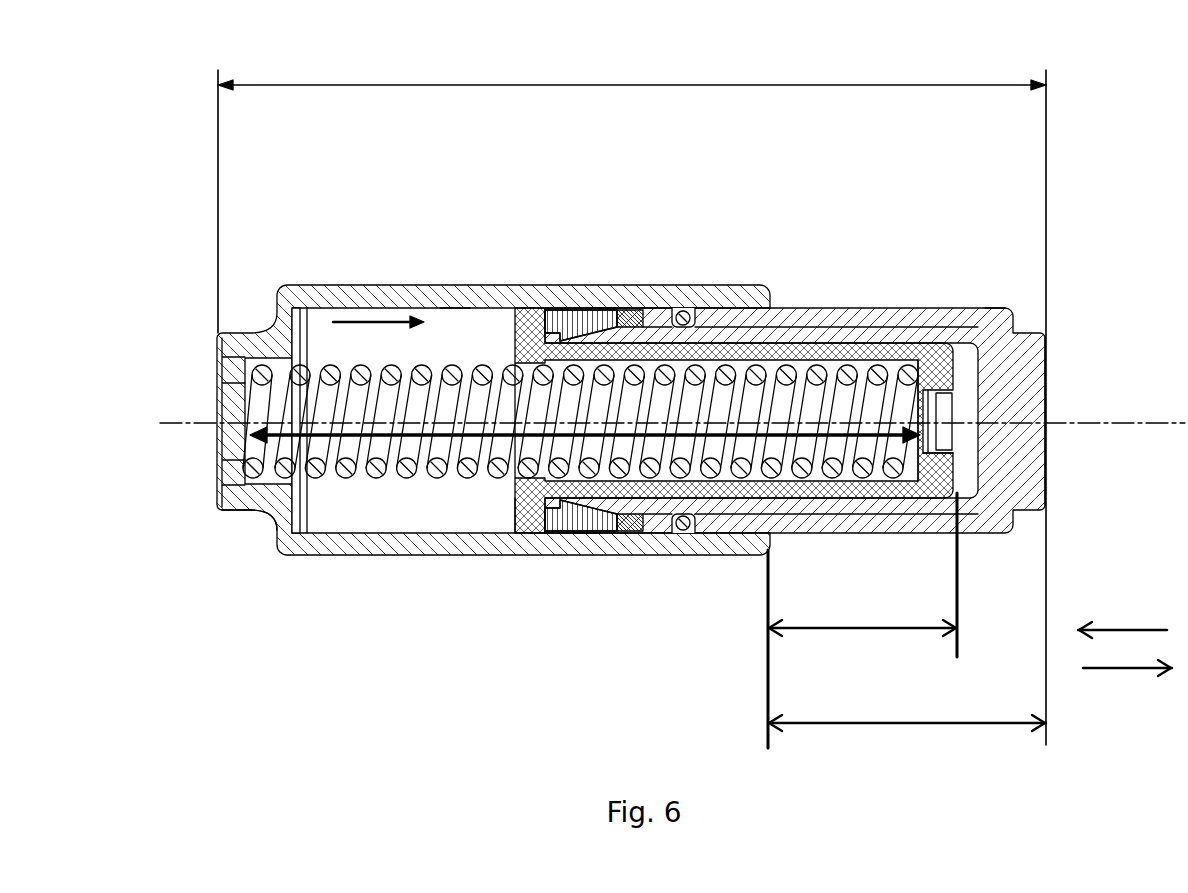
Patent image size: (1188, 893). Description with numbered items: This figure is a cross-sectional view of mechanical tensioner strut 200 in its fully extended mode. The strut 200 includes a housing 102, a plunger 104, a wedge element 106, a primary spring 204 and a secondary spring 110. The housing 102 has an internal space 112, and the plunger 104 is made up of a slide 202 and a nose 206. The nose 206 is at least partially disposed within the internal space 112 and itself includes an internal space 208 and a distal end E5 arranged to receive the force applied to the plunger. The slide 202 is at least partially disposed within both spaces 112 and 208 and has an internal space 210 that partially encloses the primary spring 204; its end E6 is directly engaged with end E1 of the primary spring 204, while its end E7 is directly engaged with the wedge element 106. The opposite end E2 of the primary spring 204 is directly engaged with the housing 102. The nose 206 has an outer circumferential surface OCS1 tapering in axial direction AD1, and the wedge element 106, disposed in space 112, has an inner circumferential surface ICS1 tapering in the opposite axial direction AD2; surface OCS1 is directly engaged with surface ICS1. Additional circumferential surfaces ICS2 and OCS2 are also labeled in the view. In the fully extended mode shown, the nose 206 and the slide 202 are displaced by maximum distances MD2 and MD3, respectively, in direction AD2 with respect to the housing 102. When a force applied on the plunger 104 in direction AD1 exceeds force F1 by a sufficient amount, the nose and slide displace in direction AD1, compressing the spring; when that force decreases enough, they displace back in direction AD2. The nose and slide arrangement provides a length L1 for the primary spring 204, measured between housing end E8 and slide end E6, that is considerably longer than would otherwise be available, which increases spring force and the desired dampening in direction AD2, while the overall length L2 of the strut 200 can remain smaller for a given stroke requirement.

The mechanical tensioner strut 200 is at (1126, 159).
The housing 102 is at (322, 283).
The plunger 104 is at (858, 266).
The wedge element 106 is at (580, 306).
The secondary spring 110 is at (636, 310).
The internal space 112 is at (485, 495).
The slide 202 is at (903, 497).
The primary spring 204 is at (540, 418).
The nose 206 is at (1000, 308).
The internal space 208 is at (962, 492).
The internal space 210 is at (835, 372).
The end of primary spring E1 is at (910, 370).
The end of primary spring E2 is at (262, 366).
The distal end of nose E5 is at (1047, 360).
The end of slide E6 is at (925, 458).
The end of slide E7 is at (530, 533).
The end of housing E8 is at (240, 510).
The force F1 is at (368, 306).
The length L1 is at (750, 440).
The overall length L2 is at (676, 85).
The inner circumferential surface ICS1 is at (575, 520).
The second inner contact surface ICS2 is at (455, 290).
The outer circumferential surface OCS1 is at (600, 500).
The second outer contact surface OCS2 is at (601, 312).
The maximum distance MD2 is at (880, 727).
The maximum distance MD3 is at (878, 632).
The axial direction AD1 is at (1128, 628).
The axial direction AD2 is at (1128, 670).